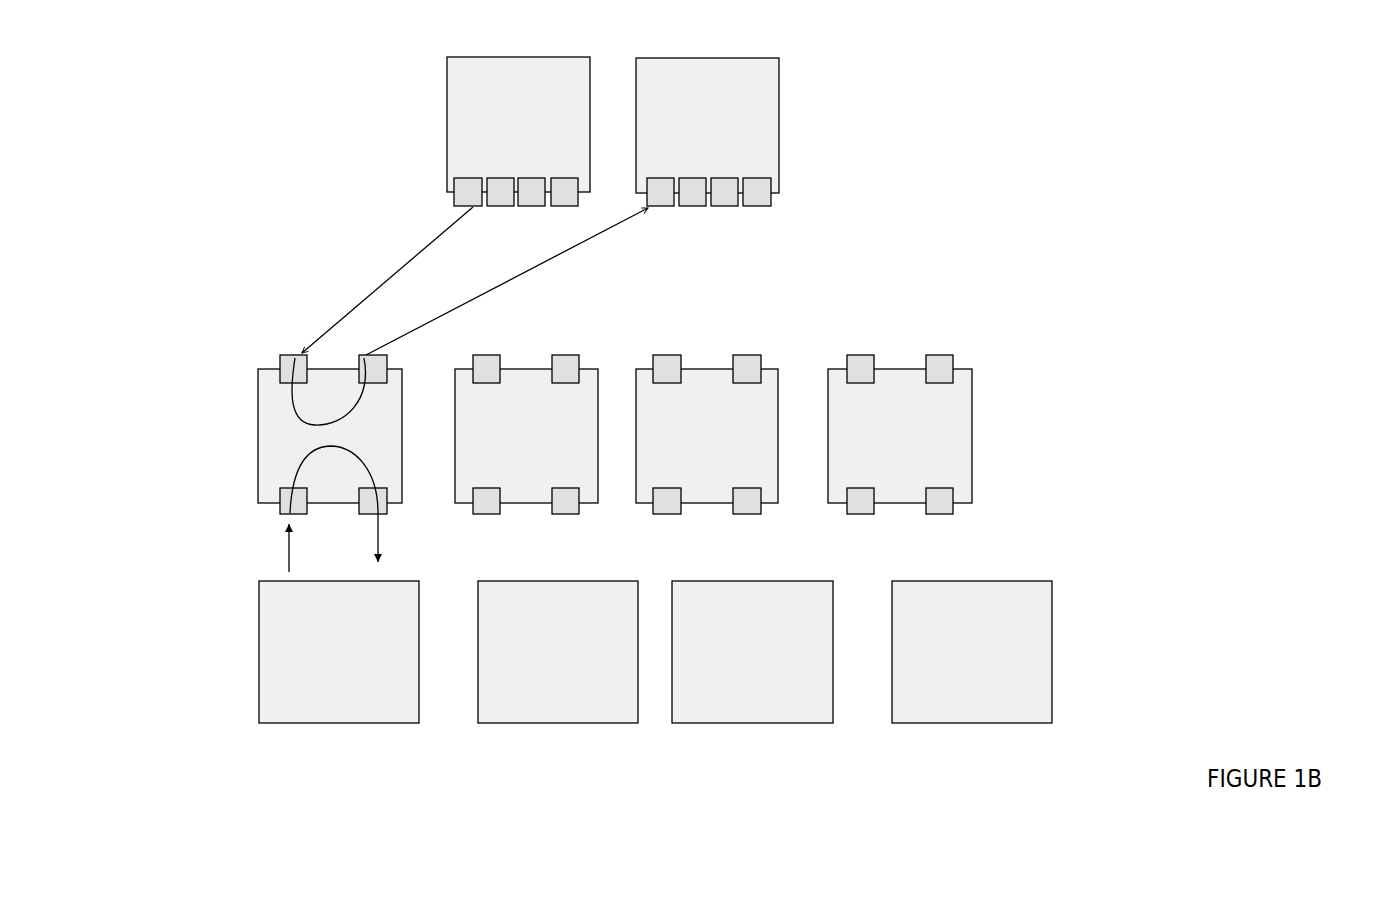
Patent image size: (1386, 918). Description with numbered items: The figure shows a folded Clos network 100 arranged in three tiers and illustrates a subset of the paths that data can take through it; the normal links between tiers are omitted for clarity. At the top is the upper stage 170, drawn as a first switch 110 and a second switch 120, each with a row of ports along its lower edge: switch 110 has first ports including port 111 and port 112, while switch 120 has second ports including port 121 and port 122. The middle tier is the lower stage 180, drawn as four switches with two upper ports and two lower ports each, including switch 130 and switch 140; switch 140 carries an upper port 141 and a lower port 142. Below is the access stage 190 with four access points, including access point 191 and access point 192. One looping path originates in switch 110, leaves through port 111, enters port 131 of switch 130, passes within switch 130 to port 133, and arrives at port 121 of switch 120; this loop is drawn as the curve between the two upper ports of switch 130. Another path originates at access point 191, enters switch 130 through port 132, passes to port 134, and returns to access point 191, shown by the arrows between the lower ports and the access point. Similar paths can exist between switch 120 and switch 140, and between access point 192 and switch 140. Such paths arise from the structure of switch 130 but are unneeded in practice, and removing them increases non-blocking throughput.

The Clos network 100 is at (735, 424).
The first switch 110 is at (443, 83).
The port 111 is at (470, 169).
The port 112 is at (462, 194).
The second switch 120 is at (786, 108).
The port 121 is at (778, 190).
The port of spine switch 122 is at (662, 177).
The switch 130 is at (254, 430).
The port 131 is at (266, 364).
The port 132 is at (260, 500).
The port 133 is at (392, 366).
The port 134 is at (391, 509).
The switch 140 is at (977, 435).
The uplink port of leaf switch 141 is at (950, 357).
The downlink port of leaf switch 142 is at (957, 502).
The upper stage 170 is at (838, 144).
The lower stage 180 is at (735, 463).
The access stage 190 is at (737, 652).
The access point 191 is at (256, 653).
The access point 192 is at (1056, 649).